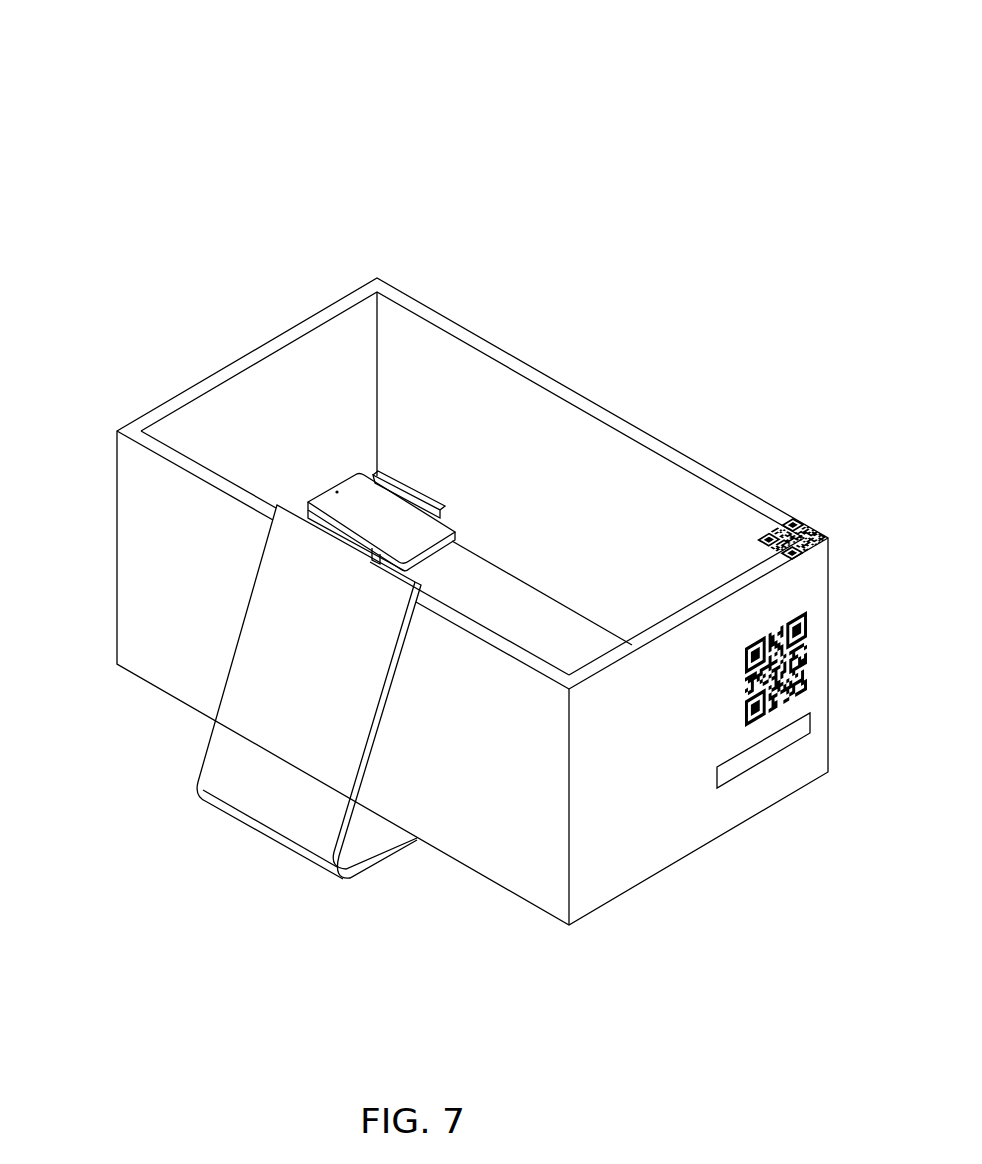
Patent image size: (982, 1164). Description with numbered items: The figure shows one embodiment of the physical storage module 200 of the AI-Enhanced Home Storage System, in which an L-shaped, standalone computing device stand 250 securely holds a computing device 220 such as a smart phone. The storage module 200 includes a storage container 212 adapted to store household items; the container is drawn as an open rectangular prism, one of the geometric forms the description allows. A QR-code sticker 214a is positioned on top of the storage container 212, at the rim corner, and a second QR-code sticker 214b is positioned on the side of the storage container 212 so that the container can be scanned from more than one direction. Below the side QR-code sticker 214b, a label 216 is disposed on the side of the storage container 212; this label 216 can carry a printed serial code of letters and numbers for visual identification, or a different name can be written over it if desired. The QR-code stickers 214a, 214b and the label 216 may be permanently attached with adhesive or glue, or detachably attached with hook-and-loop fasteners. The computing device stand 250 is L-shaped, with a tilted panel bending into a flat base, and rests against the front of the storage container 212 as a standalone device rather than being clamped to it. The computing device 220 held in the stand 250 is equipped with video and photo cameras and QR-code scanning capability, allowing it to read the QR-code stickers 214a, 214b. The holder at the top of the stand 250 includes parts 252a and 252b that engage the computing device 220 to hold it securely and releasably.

The physical storage module 200 is at (160, 66).
The storage container 212 is at (603, 406).
The QR-code sticker 214a is at (806, 517).
The QR-code sticker 214b is at (807, 652).
The label 216 is at (810, 722).
The computing device 220 is at (357, 497).
The computing device stand 250 is at (252, 757).
The clip jaw 252a is at (397, 490).
The clip 252b is at (327, 523).